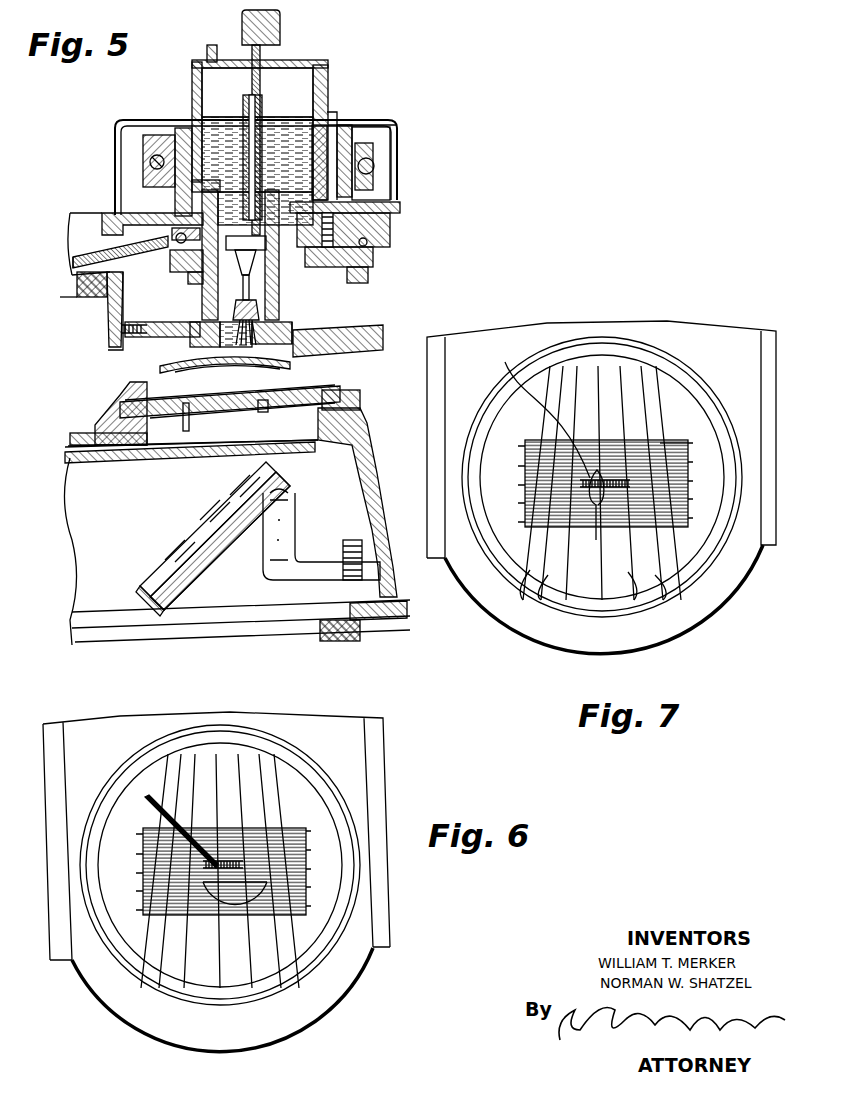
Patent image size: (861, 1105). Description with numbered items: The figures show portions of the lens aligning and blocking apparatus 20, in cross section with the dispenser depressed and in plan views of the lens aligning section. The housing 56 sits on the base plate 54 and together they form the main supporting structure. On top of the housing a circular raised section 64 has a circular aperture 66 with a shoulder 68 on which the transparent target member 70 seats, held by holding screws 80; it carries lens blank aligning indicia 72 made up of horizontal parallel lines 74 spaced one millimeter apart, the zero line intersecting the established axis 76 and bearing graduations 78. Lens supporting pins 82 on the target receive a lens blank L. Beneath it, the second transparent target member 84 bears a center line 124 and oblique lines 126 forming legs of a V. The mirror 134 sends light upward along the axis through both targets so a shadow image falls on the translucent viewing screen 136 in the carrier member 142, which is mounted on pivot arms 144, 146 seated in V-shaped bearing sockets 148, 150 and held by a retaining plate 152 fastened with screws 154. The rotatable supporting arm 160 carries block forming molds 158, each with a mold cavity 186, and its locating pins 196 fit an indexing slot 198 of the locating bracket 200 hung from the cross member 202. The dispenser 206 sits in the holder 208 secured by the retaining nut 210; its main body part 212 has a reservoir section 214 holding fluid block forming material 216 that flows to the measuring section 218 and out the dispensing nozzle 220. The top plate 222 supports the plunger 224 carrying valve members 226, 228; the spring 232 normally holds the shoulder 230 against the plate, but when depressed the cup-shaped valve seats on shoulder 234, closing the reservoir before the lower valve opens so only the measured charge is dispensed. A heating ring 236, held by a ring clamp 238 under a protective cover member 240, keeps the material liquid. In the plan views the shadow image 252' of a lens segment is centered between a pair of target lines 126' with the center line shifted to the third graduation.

In FIG. 5, the lens aligning and blocking apparatus 20 is at (100, 116).
In FIG. 5, the base plate 54 is at (262, 640).
In FIG. 5, the housing 56 is at (372, 455).
In FIG. 5, the raised section 64 is at (100, 432).
In FIG. 5, the circular aperture 66 is at (240, 450).
In FIG. 5, the shoulder 68 is at (186, 420).
In FIG. 5, the transparent target member 70 is at (265, 405).
In FIG. 7, the lens blank aligning indicia 72 is at (610, 428).
In FIG. 6, the lens blank aligning indicia 72 is at (233, 823).
In FIG. 7, the parallel lines or graduations 74 is at (655, 432).
In FIG. 7, the established axis 76 is at (542, 409).
In FIG. 7, the graduations 78 is at (593, 520).
In FIG. 6, the graduations 78 is at (184, 830).
In FIG. 5, the holding screws 80 is at (128, 392).
In FIG. 5, the lens supporting pins 82 is at (305, 393).
In FIG. 5, the second transparent target member 84 is at (140, 463).
In FIG. 7, the center line 124 is at (588, 368).
In FIG. 6, the center line 124 is at (220, 838).
In FIG. 7, the oblique lines 126 is at (604, 521).
In FIG. 6, the pair of target lines 126' is at (228, 910).
In FIG. 5, the second mirror 134 is at (150, 583).
In FIG. 7, the translucent viewing screen 136 is at (680, 545).
In FIG. 6, the translucent viewing screen 136 is at (245, 865).
In FIG. 7, the carrier member 142 is at (485, 592).
In FIG. 6, the carrier member 142 is at (108, 990).
In FIG. 5, the pivot arm 144 is at (73, 258).
In FIG. 5, the pivot arm 146 is at (392, 238).
In FIG. 5, the V-shaped bearing socket 148 is at (180, 233).
In FIG. 5, the V-shaped bearing socket 150 is at (368, 244).
In FIG. 5, the retaining plate 152 is at (370, 262).
In FIG. 5, the screws 154 is at (400, 205).
In FIG. 5, the block forming molds 158 is at (302, 328).
In FIG. 5, the rotatable supporting arm 160 is at (385, 333).
In FIG. 5, the mold cavity 186 is at (220, 404).
In FIG. 5, the locating pins 196 is at (140, 340).
In FIG. 5, the indexing slot 198 is at (118, 335).
In FIG. 5, the locating bracket 200 is at (108, 315).
In FIG. 5, the cross member 202 is at (77, 285).
In FIG. 5, the dispenser 206 is at (183, 84).
In FIG. 5, the holder 208 is at (178, 128).
In FIG. 5, the retaining nut 210 is at (335, 125).
In FIG. 5, the main body part 212 is at (345, 125).
In FIG. 5, the reservoir section 214 is at (386, 130).
In FIG. 5, the fluid block forming material 216 is at (325, 125).
In FIG. 5, the measuring section 218 is at (172, 265).
In FIG. 5, the dispensing nozzle 220 is at (262, 325).
In FIG. 5, the top plate 222 is at (247, 60).
In FIG. 5, the plunger 224 is at (322, 112).
In FIG. 5, the valve member 226 is at (250, 240).
In FIG. 5, the valve member 228 is at (232, 308).
In FIG. 5, the shoulder 230 is at (267, 90).
In FIG. 5, the spring 232 is at (262, 62).
In FIG. 5, the shoulder 234 is at (186, 232).
In FIG. 5, the heating ring 236 is at (143, 148).
In FIG. 5, the ring clamp 238 is at (150, 160).
In FIG. 5, the protective cover member 240 is at (118, 132).
In FIG. 6, the shadow image of segment 252' is at (240, 979).
In FIG. 5, the lens blank L is at (292, 362).